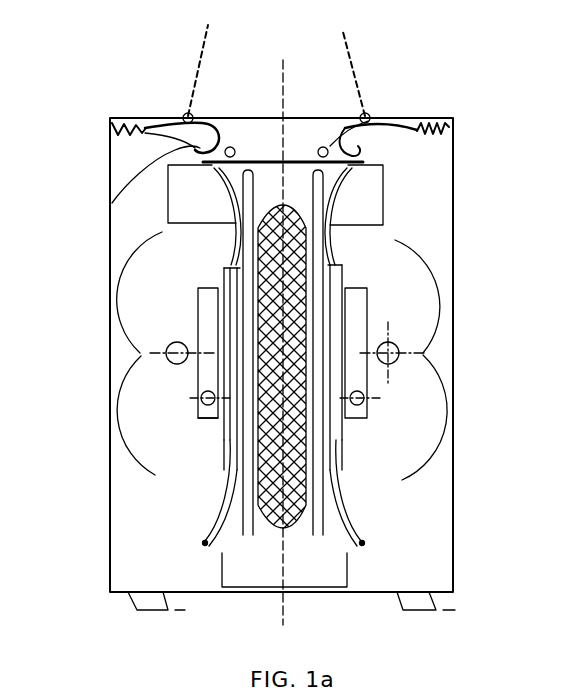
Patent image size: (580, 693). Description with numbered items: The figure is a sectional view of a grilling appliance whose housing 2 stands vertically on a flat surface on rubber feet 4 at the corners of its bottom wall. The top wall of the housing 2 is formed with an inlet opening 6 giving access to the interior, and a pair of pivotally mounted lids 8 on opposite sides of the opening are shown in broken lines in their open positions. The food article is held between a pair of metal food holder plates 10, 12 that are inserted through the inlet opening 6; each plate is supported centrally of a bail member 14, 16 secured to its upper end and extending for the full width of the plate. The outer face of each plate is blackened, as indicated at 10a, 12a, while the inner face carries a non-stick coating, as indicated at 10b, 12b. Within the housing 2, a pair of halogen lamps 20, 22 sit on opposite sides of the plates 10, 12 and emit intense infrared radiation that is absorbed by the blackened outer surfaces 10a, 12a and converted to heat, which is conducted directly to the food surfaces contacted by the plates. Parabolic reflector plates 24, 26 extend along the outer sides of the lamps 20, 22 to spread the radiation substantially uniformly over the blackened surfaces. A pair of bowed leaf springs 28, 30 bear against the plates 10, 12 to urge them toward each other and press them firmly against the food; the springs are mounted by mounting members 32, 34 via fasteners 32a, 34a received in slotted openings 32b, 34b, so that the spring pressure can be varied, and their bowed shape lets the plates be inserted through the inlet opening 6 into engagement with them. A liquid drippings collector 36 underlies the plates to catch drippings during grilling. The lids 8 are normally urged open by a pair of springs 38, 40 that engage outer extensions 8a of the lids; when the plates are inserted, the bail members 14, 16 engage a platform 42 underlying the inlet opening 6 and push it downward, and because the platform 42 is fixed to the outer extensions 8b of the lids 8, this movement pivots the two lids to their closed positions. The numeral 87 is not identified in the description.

The housing 2 is at (110, 545).
The rubber feet 4 is at (133, 607).
The inlet opening 6 is at (303, 119).
The pivotally mounted lids 8 is at (203, 60).
The outer extensions of the lids 8a is at (155, 122).
The outer extensions of the lids 8b is at (112, 203).
The metal food holder plate 10 is at (224, 268).
The blackened outer face 10a is at (236, 437).
The non-stick coated inner face 10b is at (243, 467).
The metal food holder plate 12 is at (342, 266).
The blackened outer face 12a is at (345, 433).
The non-stick coated inner face 12b is at (313, 481).
The bail member 14 is at (345, 128).
The bail member 16 is at (235, 152).
The halogen lamp 20 is at (166, 355).
The halogen lamp 22 is at (423, 353).
The parabolic reflector plate 24 is at (155, 475).
The parabolic reflector plate 26 is at (397, 242).
The leaf spring 28 is at (202, 542).
The leaf spring 30 is at (364, 538).
The mounting member 32 is at (201, 398).
The fastener 32a is at (198, 300).
The slotted opening 32b is at (200, 416).
The mounting member 34 is at (372, 320).
The fastener 34a is at (400, 353).
The slotted opening 34b is at (365, 395).
The liquid drippings collector 36 is at (312, 595).
The spring 38 is at (120, 157).
The spring 40 is at (445, 118).
The platform 42 is at (294, 118).
The lever pivot pin 87 is at (212, 118).